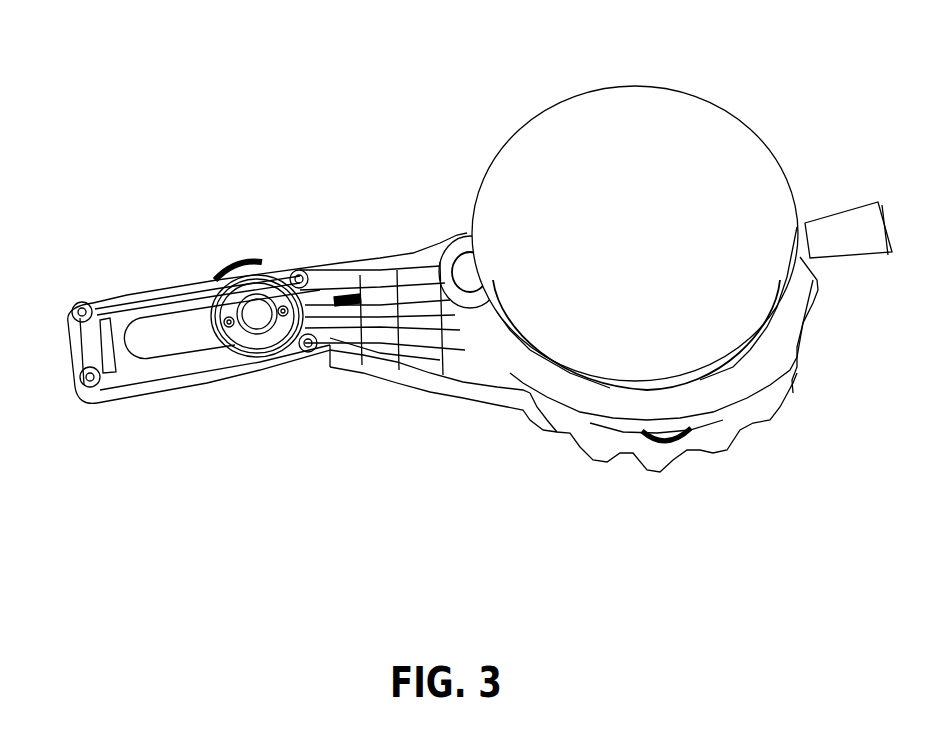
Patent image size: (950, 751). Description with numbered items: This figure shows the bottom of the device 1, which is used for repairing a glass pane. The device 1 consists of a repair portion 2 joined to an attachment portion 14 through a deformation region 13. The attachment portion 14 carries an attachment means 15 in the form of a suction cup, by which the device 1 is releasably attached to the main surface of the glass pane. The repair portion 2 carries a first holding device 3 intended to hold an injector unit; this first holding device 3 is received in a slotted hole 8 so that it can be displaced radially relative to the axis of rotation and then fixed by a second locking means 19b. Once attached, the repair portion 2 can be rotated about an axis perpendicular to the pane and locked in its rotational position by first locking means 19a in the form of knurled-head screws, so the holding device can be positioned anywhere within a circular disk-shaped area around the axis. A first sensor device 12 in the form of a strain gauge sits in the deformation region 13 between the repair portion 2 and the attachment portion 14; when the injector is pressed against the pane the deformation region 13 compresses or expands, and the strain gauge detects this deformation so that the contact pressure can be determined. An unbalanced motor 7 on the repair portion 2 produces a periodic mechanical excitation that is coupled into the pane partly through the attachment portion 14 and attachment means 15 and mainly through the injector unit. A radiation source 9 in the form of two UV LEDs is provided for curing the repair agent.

The device 1 is at (333, 101).
The repair portion 2 is at (45, 172).
The first holding device 3 is at (262, 340).
The unbalanced motor 7 is at (103, 342).
The slotted hole 8 is at (160, 332).
The radiation source 9 is at (227, 326).
The first sensor device 12 is at (335, 294).
The deformation region 13 is at (360, 330).
The attachment portion 14 is at (467, 484).
The attachment means 15 is at (537, 153).
The first locking means 19a is at (652, 437).
The second locking means 19b is at (240, 267).